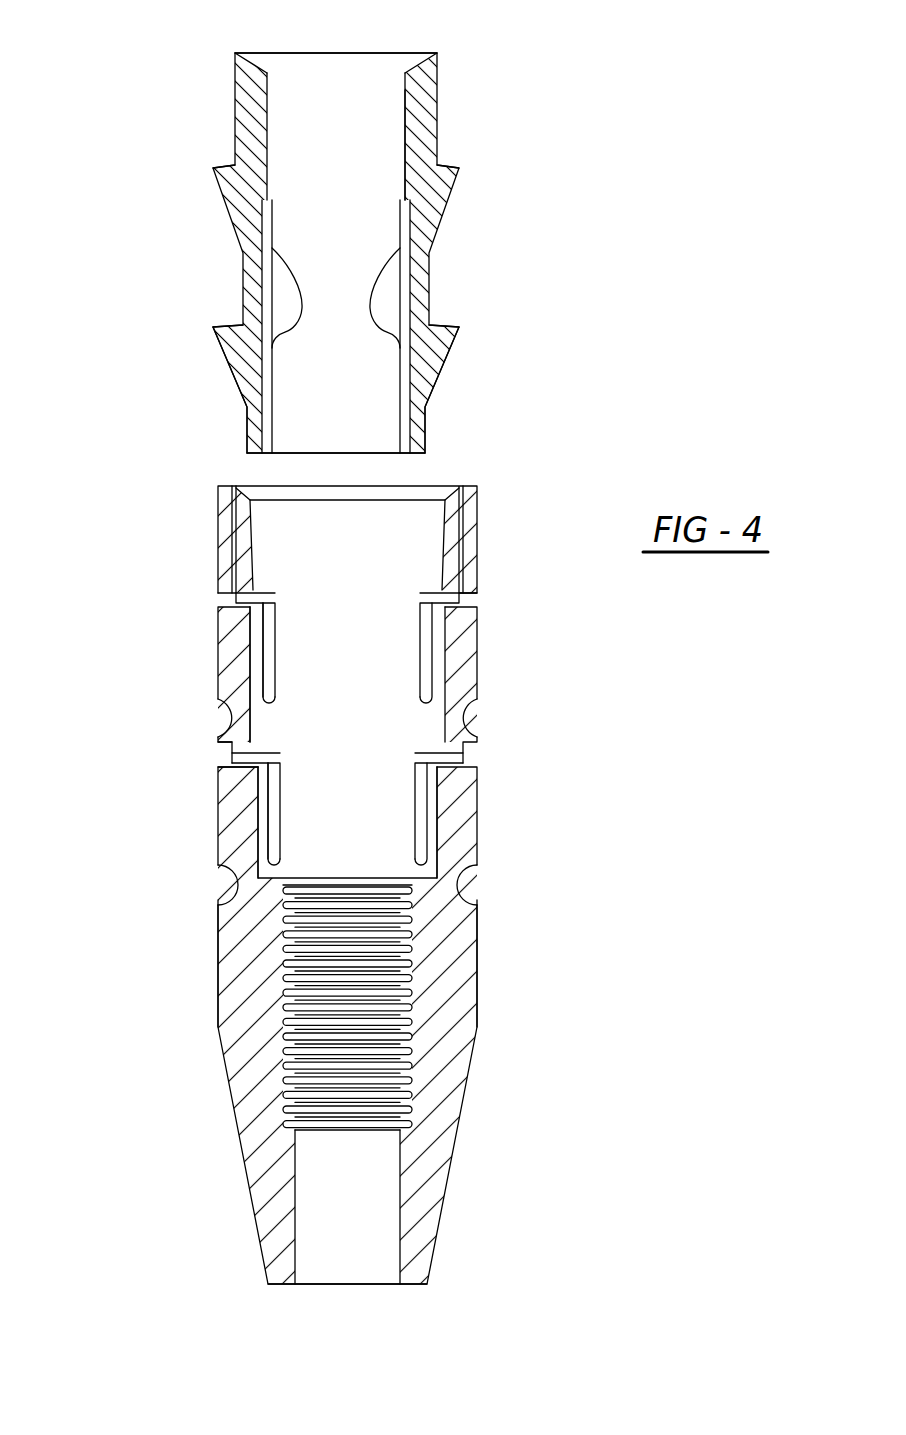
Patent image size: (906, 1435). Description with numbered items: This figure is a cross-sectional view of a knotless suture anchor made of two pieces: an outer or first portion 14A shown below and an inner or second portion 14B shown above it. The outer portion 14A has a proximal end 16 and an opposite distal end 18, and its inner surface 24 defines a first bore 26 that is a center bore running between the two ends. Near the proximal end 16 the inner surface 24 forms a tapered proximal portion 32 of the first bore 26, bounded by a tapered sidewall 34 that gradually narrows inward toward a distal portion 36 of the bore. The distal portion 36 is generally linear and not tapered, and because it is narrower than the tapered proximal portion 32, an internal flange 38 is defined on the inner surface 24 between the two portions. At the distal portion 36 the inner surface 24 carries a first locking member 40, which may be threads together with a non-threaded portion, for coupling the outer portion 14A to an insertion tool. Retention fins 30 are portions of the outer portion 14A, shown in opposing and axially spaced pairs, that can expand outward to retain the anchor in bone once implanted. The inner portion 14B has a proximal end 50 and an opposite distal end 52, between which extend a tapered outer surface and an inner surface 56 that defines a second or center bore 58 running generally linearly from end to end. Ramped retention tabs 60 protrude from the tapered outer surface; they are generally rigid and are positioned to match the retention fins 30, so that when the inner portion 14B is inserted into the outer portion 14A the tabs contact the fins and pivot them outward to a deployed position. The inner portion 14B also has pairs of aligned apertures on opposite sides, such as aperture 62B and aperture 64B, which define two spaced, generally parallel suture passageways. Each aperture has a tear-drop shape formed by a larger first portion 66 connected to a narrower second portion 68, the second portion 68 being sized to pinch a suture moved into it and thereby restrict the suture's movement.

The inner portion 14B is at (235, 98).
The proximal end 50 is at (234, 53).
The second bore 58 is at (370, 97).
The inner surface 56 is at (395, 132).
The ramped retention tabs 60 is at (213, 167).
The second portion 68 is at (265, 223).
The first portion 66 is at (277, 287).
The aperture 64B is at (277, 343).
The aperture 62B is at (450, 358).
The distal end 52 is at (250, 456).
The outer portion 14A is at (468, 1083).
The proximal end 16 is at (472, 487).
The first bore 26 is at (375, 547).
The retention fins 30 is at (218, 656).
The inner surface 24 is at (340, 697).
The tapered sidewall 34 is at (328, 770).
The tapered proximal portion 32 is at (268, 836).
The internal flange 38 is at (443, 866).
The first locking member 40 is at (372, 1018).
The distal portion 36 is at (293, 1208).
The distal end 18 is at (420, 1282).